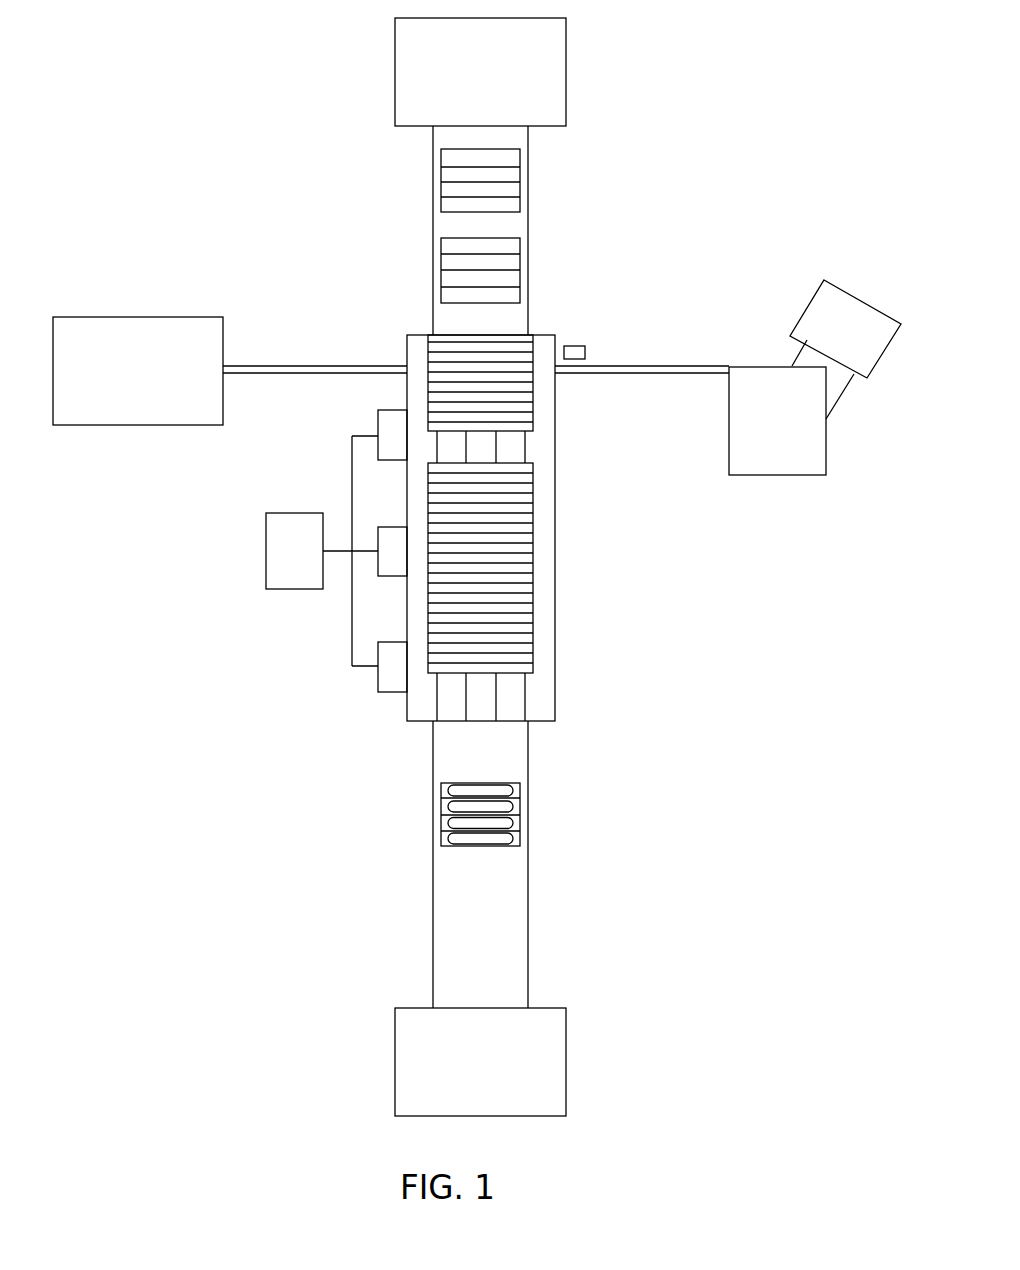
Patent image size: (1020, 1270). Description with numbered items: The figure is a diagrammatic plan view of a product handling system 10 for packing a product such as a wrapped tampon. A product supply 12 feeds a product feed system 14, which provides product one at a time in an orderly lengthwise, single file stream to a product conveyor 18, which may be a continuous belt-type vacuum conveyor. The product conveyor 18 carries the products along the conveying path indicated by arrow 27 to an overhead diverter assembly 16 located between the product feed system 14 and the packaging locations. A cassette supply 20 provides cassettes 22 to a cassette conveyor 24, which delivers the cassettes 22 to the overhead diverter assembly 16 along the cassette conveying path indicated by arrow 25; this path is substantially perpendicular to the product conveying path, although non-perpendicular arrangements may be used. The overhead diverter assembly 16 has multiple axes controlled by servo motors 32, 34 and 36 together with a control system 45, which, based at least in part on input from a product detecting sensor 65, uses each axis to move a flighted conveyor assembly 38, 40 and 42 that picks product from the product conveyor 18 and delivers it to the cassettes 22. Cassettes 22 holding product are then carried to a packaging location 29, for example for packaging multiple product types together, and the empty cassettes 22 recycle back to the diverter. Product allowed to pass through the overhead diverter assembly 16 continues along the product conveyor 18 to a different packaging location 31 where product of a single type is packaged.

The product handling system 10 is at (744, 147).
The product supply 12 is at (857, 288).
The product feed system 14 is at (777, 493).
The overhead diverter assembly 16 is at (384, 719).
The product conveyor 18 is at (303, 359).
The cassette supply 20 is at (581, 72).
The cassettes 22 is at (436, 174).
The cassette conveyor 24 is at (534, 311).
The arrow representing cassette conveying path 25 is at (548, 798).
The arrow representing product conveying path 27 is at (620, 389).
The packaging location 29 is at (574, 1058).
The different packaging location 31 is at (143, 304).
The servo motor 32 is at (378, 421).
The servo motor 34 is at (400, 577).
The servo motor 36 is at (378, 678).
The flighted conveyor assembly 38 is at (451, 708).
The flighted conveyor assembly 40 is at (484, 709).
The flighted conveyor assembly 42 is at (513, 693).
The control system 45 is at (266, 553).
The product detecting sensor 65 is at (575, 346).